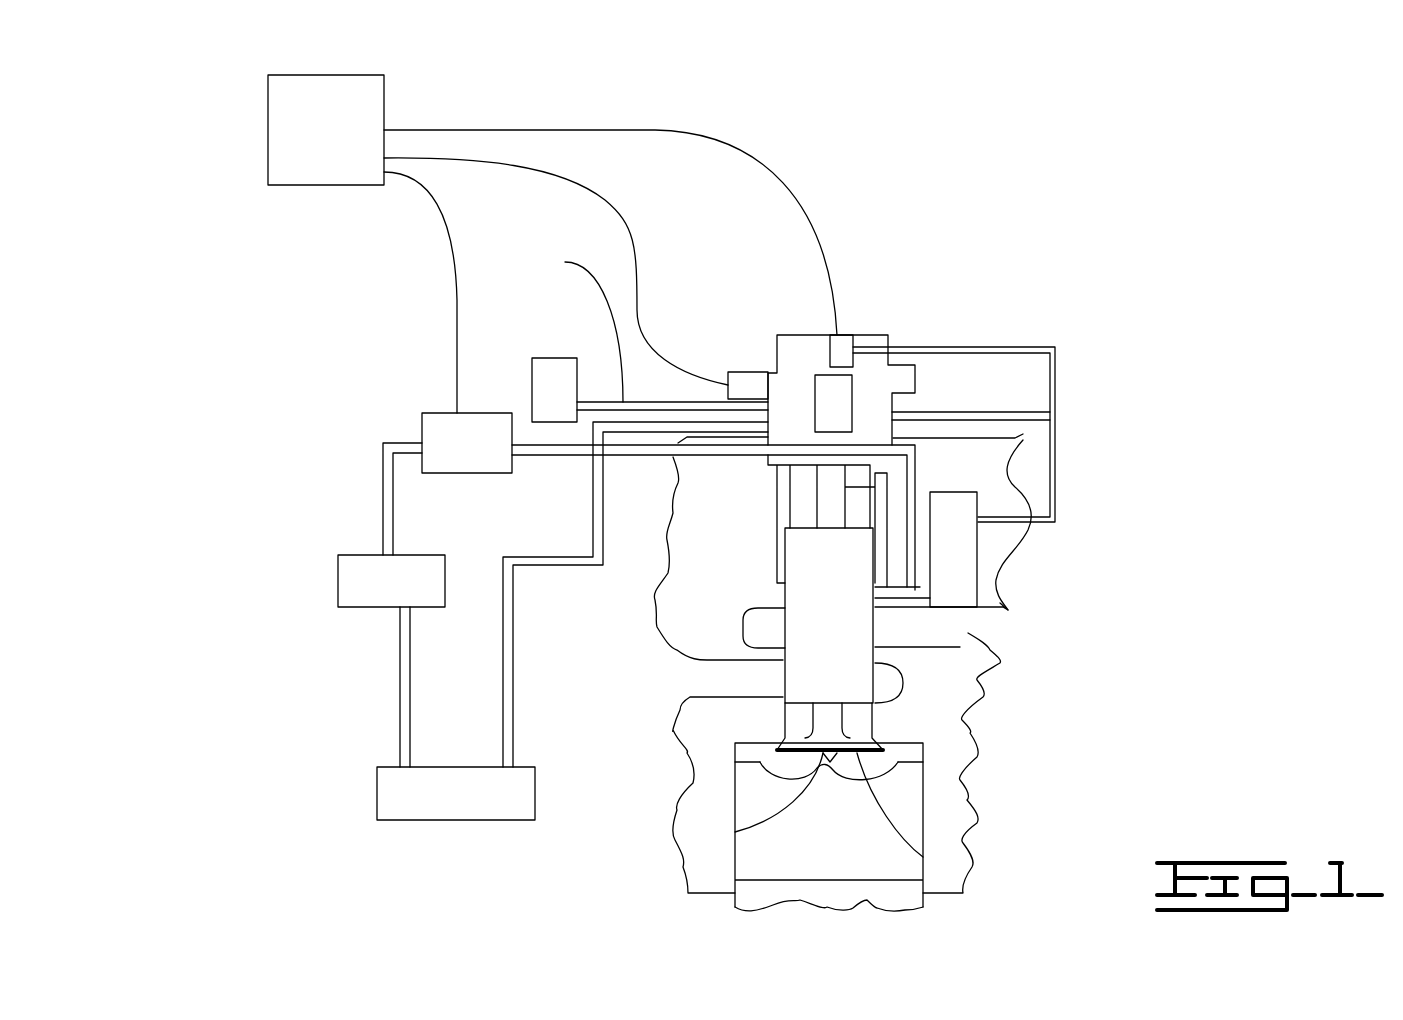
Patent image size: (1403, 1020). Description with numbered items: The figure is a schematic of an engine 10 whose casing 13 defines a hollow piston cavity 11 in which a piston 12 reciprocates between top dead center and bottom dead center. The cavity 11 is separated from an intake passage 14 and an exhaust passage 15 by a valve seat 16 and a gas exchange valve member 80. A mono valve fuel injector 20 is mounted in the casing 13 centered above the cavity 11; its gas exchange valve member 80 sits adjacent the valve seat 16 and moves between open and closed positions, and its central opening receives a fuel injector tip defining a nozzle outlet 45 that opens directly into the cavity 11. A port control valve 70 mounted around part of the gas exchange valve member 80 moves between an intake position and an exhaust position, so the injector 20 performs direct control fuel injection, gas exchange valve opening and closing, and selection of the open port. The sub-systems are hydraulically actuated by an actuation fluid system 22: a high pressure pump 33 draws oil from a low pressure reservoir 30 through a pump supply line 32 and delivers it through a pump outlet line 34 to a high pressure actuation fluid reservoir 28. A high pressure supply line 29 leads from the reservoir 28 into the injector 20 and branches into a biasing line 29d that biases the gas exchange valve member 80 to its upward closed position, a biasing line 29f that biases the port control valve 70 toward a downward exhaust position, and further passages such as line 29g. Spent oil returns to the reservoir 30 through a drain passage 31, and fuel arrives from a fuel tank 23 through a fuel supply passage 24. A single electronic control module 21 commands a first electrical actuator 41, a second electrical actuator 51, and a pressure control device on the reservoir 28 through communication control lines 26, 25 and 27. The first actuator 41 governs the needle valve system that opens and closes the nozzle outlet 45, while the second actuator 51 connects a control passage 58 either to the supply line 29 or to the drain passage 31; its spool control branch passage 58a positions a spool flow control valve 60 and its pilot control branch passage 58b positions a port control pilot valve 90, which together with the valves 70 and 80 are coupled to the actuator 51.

The engine 10 is at (1264, 272).
The hollow piston cavity 11 is at (915, 857).
The piston 12 is at (735, 858).
The casing 13 is at (967, 818).
The intake passage 14 is at (730, 697).
The exhaust passage 15 is at (968, 633).
The valve seat 16 is at (893, 767).
The mono valve fuel injector 20 is at (880, 318).
The electronic control module 21 is at (296, 185).
The actuation fluid system 22 is at (368, 746).
The fuel tank 23 is at (558, 358).
The fuel supply passage 24 is at (574, 326).
The communication control line 25 is at (657, 130).
The communication control line 26 is at (577, 172).
The communication control line 27 is at (452, 252).
The high pressure actuation fluid reservoir 28 is at (467, 473).
The high pressure supply line 29 is at (553, 455).
The biasing line 29d is at (870, 487).
The high pressure biasing line 29f is at (893, 600).
The fuel passage 29g is at (920, 582).
The low pressure reservoir 30 is at (434, 820).
The drain passage 31 is at (557, 566).
The pump supply line 32 is at (398, 703).
The high pressure pump 33 is at (338, 583).
The pump outlet line 34 is at (383, 456).
The first electrical actuator 41 is at (752, 372).
The nozzle outlet 45 is at (745, 826).
The second electrical actuator 51 is at (810, 335).
The control passage 58 is at (997, 347).
The spool control branch passage 58a is at (1002, 412).
The pilot control branch passage 58b is at (1055, 493).
The spool flow control valve 60 is at (853, 387).
The port control valve 70 is at (875, 633).
The gas exchange valve member 80 is at (923, 850).
The port control pilot valve 90 is at (977, 577).